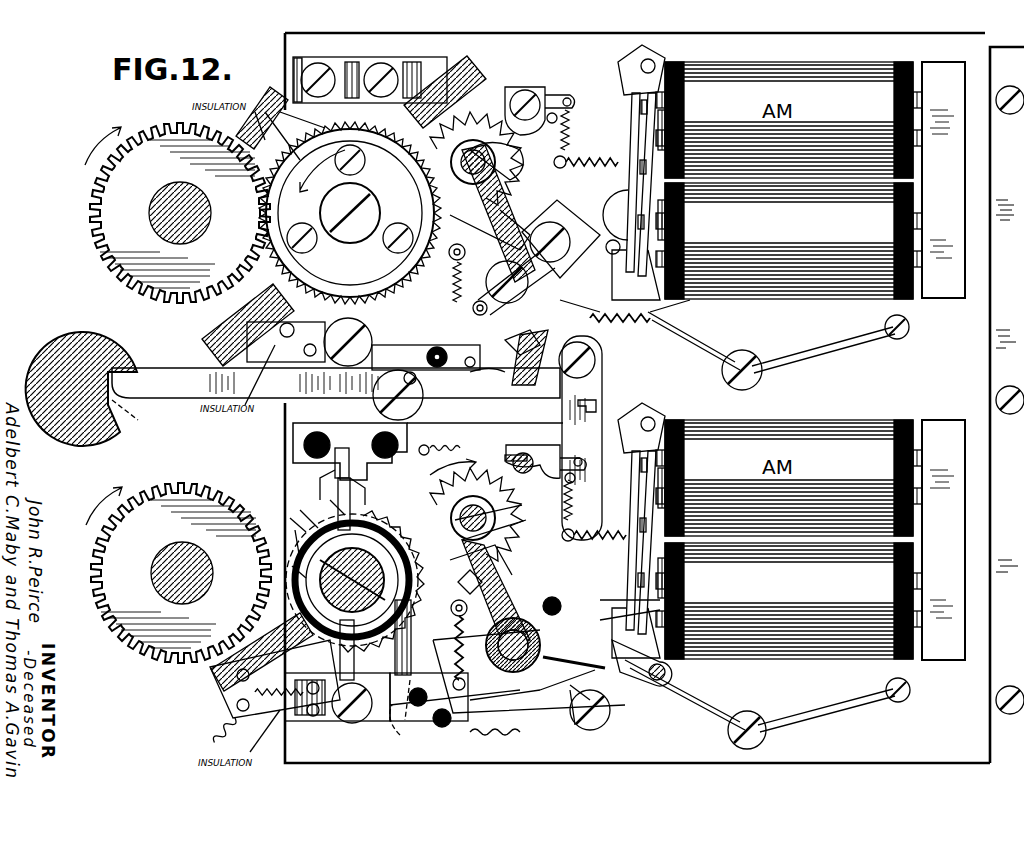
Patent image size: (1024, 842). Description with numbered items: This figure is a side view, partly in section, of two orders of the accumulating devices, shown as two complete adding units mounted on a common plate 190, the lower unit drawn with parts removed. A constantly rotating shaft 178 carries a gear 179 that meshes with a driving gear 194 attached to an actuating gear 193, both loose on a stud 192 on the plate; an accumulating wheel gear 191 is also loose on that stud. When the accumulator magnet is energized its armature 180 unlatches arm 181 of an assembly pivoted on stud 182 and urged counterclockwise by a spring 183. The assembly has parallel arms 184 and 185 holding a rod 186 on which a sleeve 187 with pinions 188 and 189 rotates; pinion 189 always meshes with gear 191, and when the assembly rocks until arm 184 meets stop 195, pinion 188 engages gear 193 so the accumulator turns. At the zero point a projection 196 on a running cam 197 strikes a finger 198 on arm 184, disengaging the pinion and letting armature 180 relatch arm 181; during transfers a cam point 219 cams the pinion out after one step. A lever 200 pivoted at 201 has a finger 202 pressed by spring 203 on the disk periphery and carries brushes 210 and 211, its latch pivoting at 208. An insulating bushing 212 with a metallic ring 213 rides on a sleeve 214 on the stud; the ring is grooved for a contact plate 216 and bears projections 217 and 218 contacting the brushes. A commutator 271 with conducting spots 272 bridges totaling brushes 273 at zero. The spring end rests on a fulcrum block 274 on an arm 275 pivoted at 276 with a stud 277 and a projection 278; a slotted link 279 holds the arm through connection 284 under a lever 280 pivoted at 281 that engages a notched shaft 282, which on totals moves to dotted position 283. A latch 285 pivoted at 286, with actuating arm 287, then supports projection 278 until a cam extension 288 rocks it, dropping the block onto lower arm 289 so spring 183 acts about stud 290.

The shaft 178 is at (165, 200).
The gear 179 is at (118, 208).
The armature 180 is at (630, 186).
The arm 181 is at (608, 278).
The stud 182 is at (490, 282).
The spring 183 is at (700, 352).
The arm 184 is at (520, 588).
The arm 185 is at (553, 200).
The rod 186 is at (505, 178).
The sleeve 187 is at (510, 518).
The pinion 188 is at (512, 490).
The pinion 189 is at (572, 142).
The plate 190 is at (893, 755).
The accumulating wheel gear 191 is at (467, 266).
The stud 192 is at (330, 212).
The actuating gear 193 is at (312, 520).
The driving gear 194 is at (340, 510).
The stop 195 is at (492, 578).
The projection 196 is at (338, 482).
The cam 197 is at (300, 525).
The finger 198 is at (445, 500).
The lever 200 is at (378, 718).
The pivot 201 is at (345, 715).
The finger 202 is at (446, 645).
The spring 203 is at (470, 655).
The pivot 208 is at (275, 692).
The brush 210 is at (250, 640).
The brush 211 is at (504, 636).
The insulating bushing 212 is at (300, 545).
The metallic ring 213 is at (461, 583).
The sleeve 214 is at (327, 598).
The contact plate 216 is at (408, 462).
The contact projections 217 is at (298, 572).
The contact projections 218 is at (375, 640).
The cam point 219 is at (374, 500).
The commutator 271 is at (252, 230).
The conducting spots 272 is at (222, 338).
The totaling brushes 273 is at (440, 80).
The fulcrum block 274 is at (630, 695).
The arm 275 is at (420, 372).
The pivot 276 is at (418, 717).
The stud 277 is at (598, 358).
The projection 278 is at (530, 356).
The link 279 is at (600, 385).
The lever 280 is at (525, 428).
The pivot 281 is at (383, 400).
The notched shaft 282 is at (58, 352).
The dotted line position 283 is at (138, 425).
The connection 284 is at (600, 405).
The latch 285 is at (528, 380).
The pivot 286 is at (566, 234).
The actuating arm 287 is at (465, 140).
The cam extensions 288 is at (395, 150).
The lower arm 289 is at (498, 378).
The stud 290 is at (758, 363).